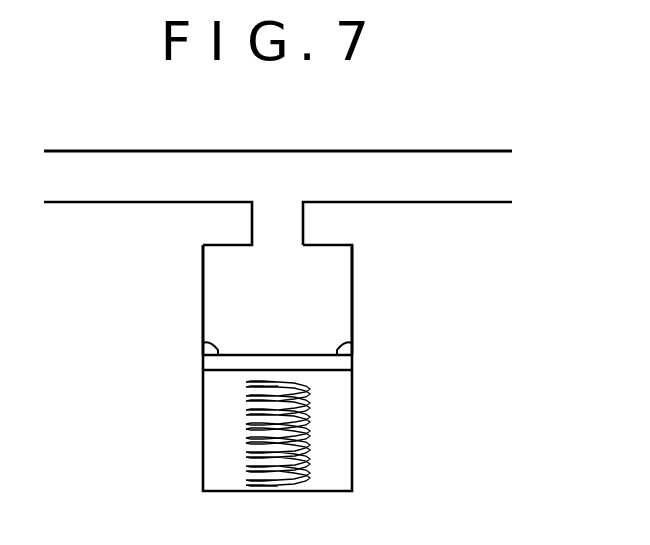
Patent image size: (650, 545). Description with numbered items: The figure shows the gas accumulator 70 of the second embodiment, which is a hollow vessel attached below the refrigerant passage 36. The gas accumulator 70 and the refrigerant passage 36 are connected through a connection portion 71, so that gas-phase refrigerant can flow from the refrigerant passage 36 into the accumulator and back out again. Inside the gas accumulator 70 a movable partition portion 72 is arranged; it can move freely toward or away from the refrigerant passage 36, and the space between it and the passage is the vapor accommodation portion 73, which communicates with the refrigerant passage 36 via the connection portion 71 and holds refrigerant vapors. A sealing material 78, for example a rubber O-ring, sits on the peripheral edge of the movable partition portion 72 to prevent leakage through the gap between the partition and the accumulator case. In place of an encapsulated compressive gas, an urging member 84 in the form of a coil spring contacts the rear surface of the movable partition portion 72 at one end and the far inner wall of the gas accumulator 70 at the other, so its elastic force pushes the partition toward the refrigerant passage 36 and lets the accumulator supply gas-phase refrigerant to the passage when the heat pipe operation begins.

The refrigerant passage 36 is at (151, 163).
The connection portion 71 is at (293, 223).
The gas accumulator 70 is at (365, 408).
The vapor accommodation portion 73 is at (216, 287).
The sealing material 78 is at (207, 348).
The movable partition portion 72 is at (215, 365).
The urging member 84 is at (250, 437).